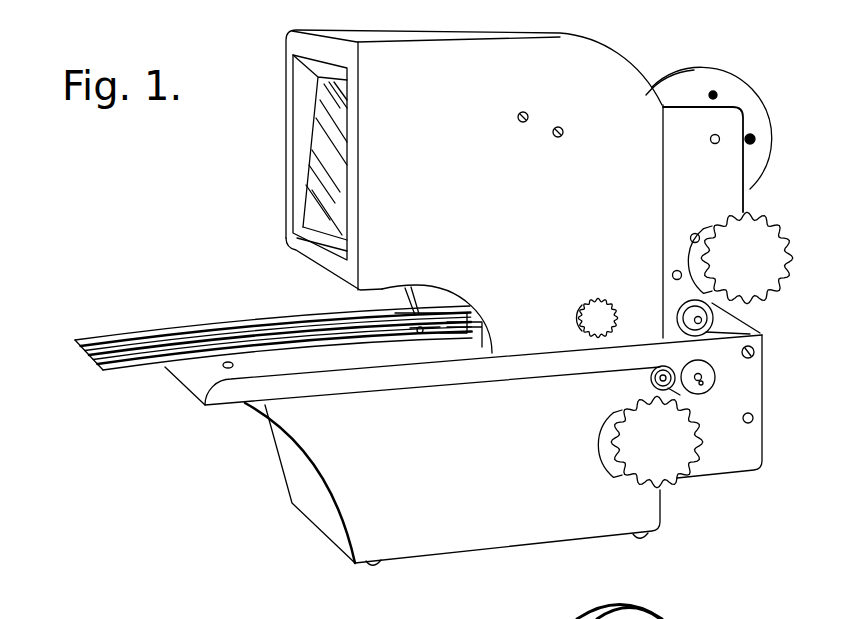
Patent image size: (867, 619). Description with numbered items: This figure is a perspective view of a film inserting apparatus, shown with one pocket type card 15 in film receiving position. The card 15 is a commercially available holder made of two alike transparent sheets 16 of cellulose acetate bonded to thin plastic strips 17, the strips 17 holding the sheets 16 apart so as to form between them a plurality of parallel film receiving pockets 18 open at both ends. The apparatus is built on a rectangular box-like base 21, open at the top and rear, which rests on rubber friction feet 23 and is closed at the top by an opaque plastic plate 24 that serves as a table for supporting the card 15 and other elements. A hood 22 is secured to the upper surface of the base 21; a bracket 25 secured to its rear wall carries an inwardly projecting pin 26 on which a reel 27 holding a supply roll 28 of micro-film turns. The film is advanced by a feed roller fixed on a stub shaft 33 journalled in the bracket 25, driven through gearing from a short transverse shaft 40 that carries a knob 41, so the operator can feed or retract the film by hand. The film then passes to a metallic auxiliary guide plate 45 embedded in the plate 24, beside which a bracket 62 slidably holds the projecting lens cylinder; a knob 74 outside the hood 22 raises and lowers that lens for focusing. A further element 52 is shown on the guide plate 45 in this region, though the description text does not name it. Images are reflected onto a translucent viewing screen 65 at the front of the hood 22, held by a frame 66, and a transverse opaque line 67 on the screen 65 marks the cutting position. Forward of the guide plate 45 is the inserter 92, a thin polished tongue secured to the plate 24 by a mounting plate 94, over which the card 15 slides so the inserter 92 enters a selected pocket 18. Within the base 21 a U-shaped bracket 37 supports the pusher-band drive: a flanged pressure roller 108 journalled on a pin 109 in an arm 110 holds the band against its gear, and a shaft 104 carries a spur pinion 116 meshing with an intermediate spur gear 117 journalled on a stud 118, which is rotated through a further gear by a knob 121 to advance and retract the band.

The card 15 is at (101, 327).
The sheets 16 is at (127, 371).
The strips 17 is at (202, 333).
The film receiving pockets 18 is at (90, 362).
The base 21 is at (228, 392).
The hood 22 is at (586, 53).
The rubber friction feet 23 is at (375, 570).
The plate 24 is at (325, 353).
The bracket 25 is at (720, 190).
The pin 26 is at (715, 144).
The reel 27 is at (766, 141).
The supply roll 28 is at (753, 136).
The stub shaft 33 is at (680, 271).
The U-shaped bracket 37 is at (756, 403).
The shaft 40 is at (697, 234).
The knob 41 is at (768, 237).
The auxiliary guide plate 45 is at (452, 347).
The platen housing 52 is at (457, 327).
The bracket 62 is at (480, 347).
The viewing screen 65 is at (322, 127).
The frame 66 is at (315, 241).
The opaque line 67 is at (308, 216).
The knob 74 is at (599, 305).
The inserter 92 is at (411, 328).
The mounting plate 94 is at (418, 331).
The shaft 104 is at (701, 385).
The flanged pressure roller 108 is at (677, 315).
The pin 109 is at (700, 326).
The arm 110 is at (715, 324).
The spur pinion 116 is at (712, 377).
The intermediate spur gear 117 is at (672, 392).
The stud 118 is at (655, 378).
The knob 121 is at (636, 458).